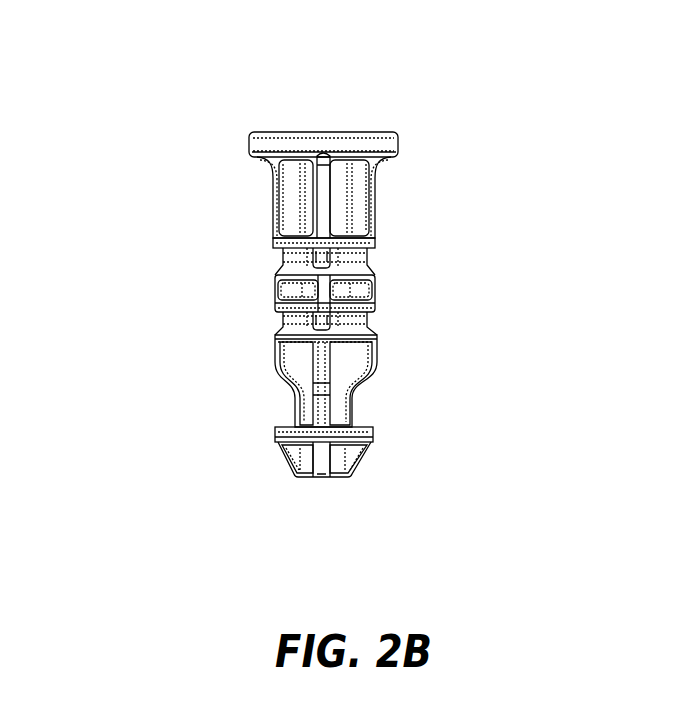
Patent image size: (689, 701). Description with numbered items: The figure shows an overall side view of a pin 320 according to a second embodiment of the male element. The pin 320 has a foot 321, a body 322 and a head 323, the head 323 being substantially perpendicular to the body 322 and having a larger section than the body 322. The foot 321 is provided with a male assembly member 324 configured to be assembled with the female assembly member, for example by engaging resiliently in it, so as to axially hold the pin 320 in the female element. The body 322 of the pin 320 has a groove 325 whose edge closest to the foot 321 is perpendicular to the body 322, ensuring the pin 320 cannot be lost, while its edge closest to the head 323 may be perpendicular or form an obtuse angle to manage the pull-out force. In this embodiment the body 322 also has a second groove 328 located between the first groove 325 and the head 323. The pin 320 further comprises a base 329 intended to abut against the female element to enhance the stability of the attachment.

The pin 320 is at (178, 163).
The foot 321 is at (323, 480).
The body 322 is at (482, 155).
The head 323 is at (327, 133).
The male assembly member 324 is at (275, 443).
The groove 325 is at (277, 318).
The second groove 328 is at (277, 257).
The base 329 is at (277, 372).